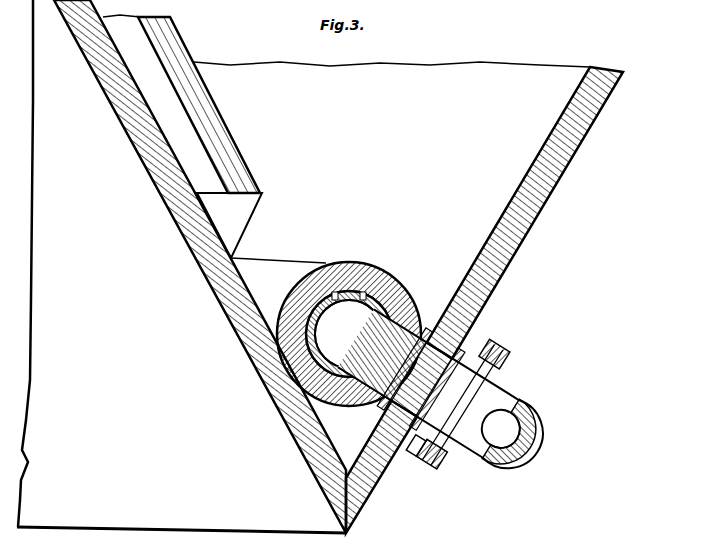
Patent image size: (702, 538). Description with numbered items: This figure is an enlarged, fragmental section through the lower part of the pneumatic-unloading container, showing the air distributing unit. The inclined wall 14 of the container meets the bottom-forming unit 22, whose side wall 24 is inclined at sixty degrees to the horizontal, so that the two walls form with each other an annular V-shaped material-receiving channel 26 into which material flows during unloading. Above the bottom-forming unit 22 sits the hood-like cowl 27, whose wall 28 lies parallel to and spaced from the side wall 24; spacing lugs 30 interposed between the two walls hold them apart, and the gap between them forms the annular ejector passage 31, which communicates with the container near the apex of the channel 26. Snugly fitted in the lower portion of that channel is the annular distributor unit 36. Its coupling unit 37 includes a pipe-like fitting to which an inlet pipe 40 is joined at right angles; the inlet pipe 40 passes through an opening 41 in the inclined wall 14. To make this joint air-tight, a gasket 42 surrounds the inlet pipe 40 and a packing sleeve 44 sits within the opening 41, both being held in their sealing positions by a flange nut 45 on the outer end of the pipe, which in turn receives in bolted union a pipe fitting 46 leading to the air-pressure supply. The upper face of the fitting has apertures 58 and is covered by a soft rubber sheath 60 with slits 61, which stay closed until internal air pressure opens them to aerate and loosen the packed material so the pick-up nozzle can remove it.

The inclined wall 14 is at (592, 131).
The bottom-forming unit 22 is at (181, 266).
The side wall 24 is at (122, 119).
The V-shaped material-receiving channel 26 is at (347, 463).
The cowl 27 is at (224, 111).
The wall 28 is at (242, 173).
The spacing lugs 30 is at (238, 222).
The annular ejector passage 31 is at (142, 57).
The annular distributor unit 36 is at (316, 334).
The coupling unit 37 is at (481, 398).
The inlet pipe 40 is at (440, 405).
The opening 41 is at (455, 377).
The gasket 42 is at (431, 362).
The packing sleeve 44 is at (403, 455).
The flange nut 45 is at (430, 467).
The pipe fitting 46 is at (491, 458).
The apertures 58 is at (364, 296).
The sheath 60 is at (371, 270).
The slits 61 is at (324, 268).